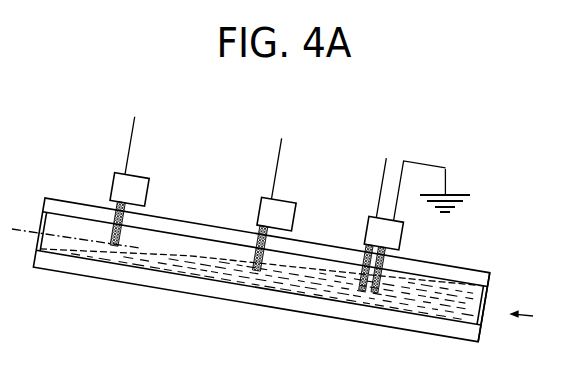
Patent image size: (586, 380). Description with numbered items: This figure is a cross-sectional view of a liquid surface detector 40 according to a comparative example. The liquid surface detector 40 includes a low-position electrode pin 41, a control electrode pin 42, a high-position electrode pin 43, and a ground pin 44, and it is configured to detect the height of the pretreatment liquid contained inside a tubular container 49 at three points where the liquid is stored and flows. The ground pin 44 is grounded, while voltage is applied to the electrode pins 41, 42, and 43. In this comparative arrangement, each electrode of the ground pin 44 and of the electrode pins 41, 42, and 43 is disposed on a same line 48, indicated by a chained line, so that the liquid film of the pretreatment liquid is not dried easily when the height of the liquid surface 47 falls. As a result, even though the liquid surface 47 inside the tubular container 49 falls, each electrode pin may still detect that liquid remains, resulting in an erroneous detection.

The liquid surface detector 40 is at (474, 140).
The low-position electrode pin 41 is at (364, 251).
The control electrode pin 42 is at (256, 239).
The high-position electrode pin 43 is at (112, 209).
The ground pin 44 is at (392, 264).
The liquid surface 47 is at (77, 251).
The same line 48 is at (500, 312).
The tubular container 49 is at (147, 279).